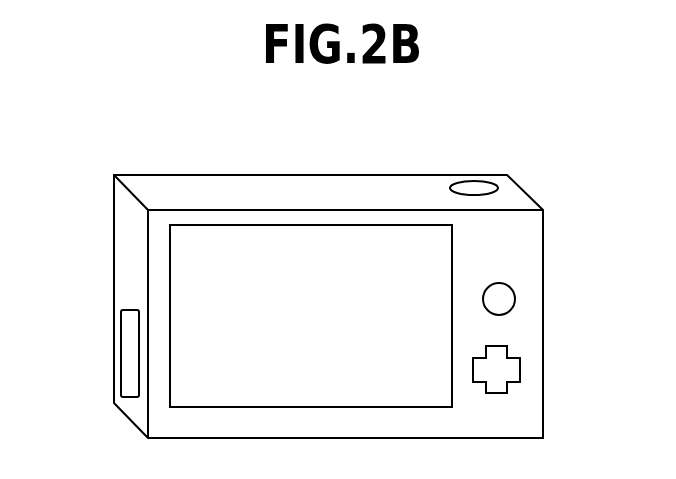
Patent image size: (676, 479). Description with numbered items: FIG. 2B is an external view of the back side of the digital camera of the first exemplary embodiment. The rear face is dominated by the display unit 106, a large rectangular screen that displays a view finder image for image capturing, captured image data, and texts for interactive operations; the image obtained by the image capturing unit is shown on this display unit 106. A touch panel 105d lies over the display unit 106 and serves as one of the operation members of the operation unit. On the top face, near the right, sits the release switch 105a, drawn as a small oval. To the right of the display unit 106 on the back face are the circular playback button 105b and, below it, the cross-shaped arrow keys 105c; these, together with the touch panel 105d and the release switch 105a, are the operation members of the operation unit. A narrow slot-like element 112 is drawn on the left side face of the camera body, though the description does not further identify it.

The release switch 105a is at (477, 188).
The playback button 105b is at (515, 296).
The arrow keys 105c is at (520, 367).
The touch panel 105d is at (268, 225).
The display unit 106 is at (438, 252).
The connector / slot 112 is at (120, 354).